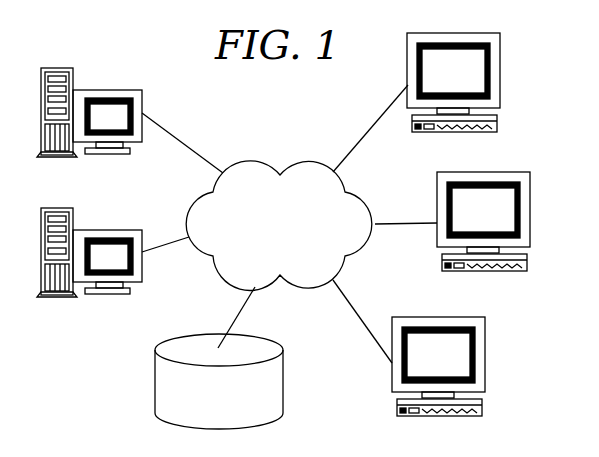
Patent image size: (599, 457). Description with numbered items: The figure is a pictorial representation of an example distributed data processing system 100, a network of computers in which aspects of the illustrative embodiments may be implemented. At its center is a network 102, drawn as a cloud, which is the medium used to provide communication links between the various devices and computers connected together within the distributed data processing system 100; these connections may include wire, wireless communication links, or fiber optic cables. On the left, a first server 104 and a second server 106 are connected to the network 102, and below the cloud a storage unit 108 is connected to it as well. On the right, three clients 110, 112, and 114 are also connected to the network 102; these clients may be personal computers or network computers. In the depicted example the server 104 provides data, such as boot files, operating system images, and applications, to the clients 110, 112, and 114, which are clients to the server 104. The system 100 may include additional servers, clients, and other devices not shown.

The distributed data processing system 100 is at (116, 362).
The network 102 is at (257, 162).
The server 104 is at (108, 90).
The server 106 is at (108, 230).
The storage unit 108 is at (283, 372).
The client 110 is at (500, 78).
The client 112 is at (530, 218).
The client 114 is at (485, 360).